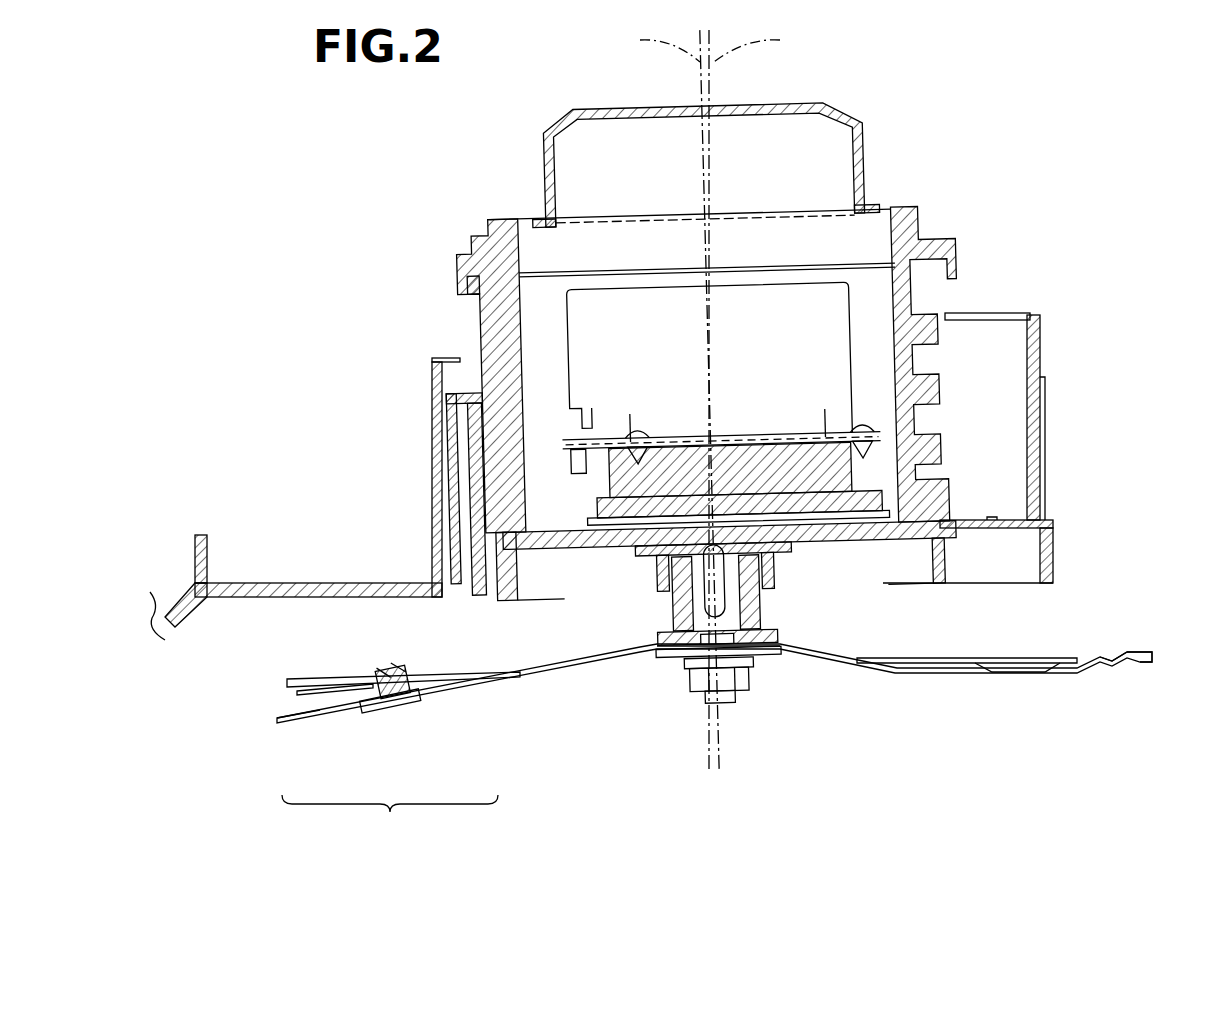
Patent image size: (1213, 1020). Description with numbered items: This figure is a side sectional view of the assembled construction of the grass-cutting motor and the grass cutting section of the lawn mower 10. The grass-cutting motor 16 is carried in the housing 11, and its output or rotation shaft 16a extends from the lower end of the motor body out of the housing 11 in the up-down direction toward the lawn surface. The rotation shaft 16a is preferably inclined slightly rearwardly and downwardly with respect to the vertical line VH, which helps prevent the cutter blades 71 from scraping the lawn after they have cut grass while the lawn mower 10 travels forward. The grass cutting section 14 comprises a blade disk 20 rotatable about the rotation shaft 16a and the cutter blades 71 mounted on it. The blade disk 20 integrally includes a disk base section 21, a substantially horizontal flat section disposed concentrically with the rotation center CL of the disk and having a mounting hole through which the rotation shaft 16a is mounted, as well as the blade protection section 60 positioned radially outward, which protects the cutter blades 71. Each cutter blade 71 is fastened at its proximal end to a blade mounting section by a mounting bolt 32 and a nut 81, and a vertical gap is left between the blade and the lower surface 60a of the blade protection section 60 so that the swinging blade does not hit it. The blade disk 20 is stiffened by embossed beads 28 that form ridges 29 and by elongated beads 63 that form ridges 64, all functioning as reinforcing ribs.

The lawn mower 10 is at (218, 167).
The housing 11 is at (437, 440).
The grass cutting section 14 is at (390, 823).
The grass-cutting motor 16 is at (783, 315).
The rotation shaft 16a is at (733, 601).
The blade disk 20 is at (467, 693).
The disk base section 21 is at (648, 648).
The bead 28 is at (1017, 665).
The ridge 29 is at (1030, 660).
The mounting bolt 32 is at (390, 672).
The blade protection section 60 is at (287, 680).
The lower surface of the blade protection section 60a is at (297, 690).
The elongated bead 63 is at (1113, 669).
The ridge 64 is at (1128, 652).
The cutter blade 71 is at (293, 720).
The nut 81 is at (410, 672).
The rotation center CL is at (654, 400).
The vertical line VH is at (767, 398).